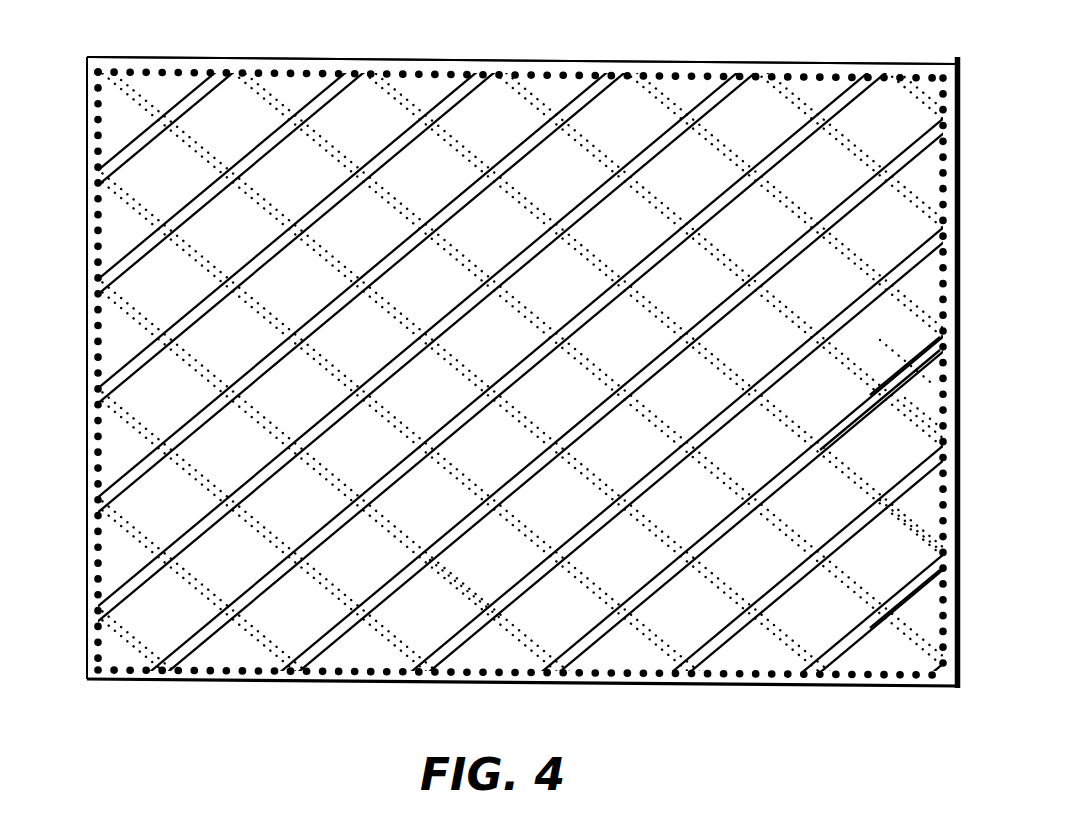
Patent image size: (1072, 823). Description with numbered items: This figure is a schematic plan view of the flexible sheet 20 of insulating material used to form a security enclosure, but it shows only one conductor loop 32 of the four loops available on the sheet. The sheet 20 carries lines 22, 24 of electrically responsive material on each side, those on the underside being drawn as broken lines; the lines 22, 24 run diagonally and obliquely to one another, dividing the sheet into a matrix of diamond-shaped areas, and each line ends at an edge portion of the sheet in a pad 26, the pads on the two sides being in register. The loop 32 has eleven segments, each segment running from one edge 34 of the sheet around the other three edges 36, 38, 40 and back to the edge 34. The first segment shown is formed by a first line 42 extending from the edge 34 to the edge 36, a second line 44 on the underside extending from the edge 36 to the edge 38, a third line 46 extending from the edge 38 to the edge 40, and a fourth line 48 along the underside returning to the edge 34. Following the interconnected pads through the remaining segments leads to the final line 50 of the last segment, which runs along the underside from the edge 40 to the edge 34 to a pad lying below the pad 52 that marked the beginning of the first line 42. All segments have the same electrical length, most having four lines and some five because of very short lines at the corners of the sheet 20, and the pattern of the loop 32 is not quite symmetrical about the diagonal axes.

The flexible sheet 20 is at (957, 117).
The line 22 is at (912, 598).
The line 24 is at (920, 538).
The pad 26 is at (957, 188).
The conductor loop 32 is at (948, 428).
The edge 34 is at (958, 241).
The edge 36 is at (913, 687).
The edge 38 is at (88, 432).
The edge 40 is at (453, 59).
The first line 42 is at (843, 437).
The second line 44 is at (478, 600).
The third line 46 is at (303, 108).
The fourth line 48 is at (444, 162).
The final line 50 is at (902, 395).
The pad 52 is at (900, 330).